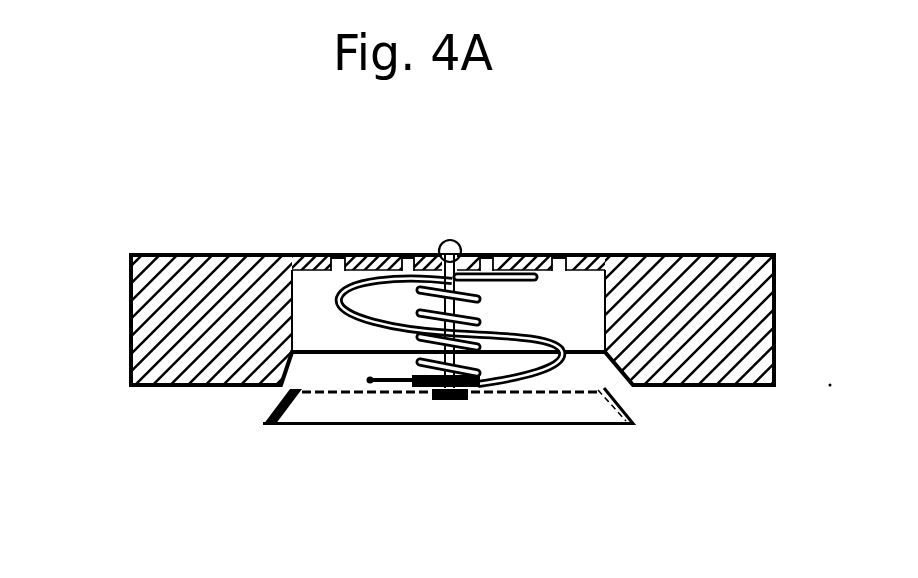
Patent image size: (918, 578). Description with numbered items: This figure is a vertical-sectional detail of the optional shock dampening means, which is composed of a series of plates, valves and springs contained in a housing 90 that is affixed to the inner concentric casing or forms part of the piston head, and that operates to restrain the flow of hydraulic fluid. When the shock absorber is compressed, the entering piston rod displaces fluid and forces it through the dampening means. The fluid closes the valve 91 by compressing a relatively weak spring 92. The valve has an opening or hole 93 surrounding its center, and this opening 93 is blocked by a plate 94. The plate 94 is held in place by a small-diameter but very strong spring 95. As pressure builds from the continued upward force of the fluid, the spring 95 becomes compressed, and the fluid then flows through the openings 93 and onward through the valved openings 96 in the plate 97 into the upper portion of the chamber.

The housing 90 is at (160, 387).
The valve 91 is at (278, 420).
The spring 92 is at (550, 366).
The opening 93 is at (428, 394).
The plate 94 is at (408, 378).
The spring 95 is at (478, 322).
The valved opening 96 is at (408, 254).
The plate 97 is at (588, 254).